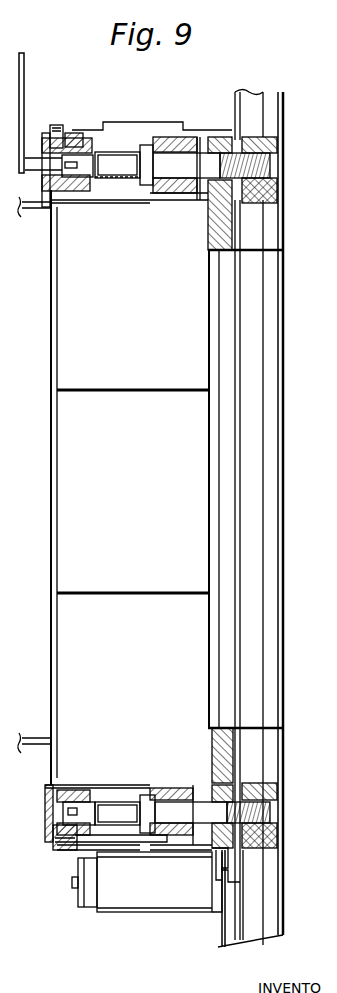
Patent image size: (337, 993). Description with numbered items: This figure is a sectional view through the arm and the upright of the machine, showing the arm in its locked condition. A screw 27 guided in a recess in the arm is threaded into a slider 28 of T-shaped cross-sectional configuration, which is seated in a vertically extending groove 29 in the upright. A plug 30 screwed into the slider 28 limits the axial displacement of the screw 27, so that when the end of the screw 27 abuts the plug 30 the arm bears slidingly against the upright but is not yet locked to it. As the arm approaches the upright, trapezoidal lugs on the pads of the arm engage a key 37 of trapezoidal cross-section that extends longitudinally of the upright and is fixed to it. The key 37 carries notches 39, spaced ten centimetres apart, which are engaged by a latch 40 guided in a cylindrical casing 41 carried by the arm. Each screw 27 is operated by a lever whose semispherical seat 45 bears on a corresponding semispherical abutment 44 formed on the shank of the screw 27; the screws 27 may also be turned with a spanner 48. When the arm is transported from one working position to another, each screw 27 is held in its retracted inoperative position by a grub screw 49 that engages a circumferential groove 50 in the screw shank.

The screw 27 is at (183, 168).
The slider 28 is at (247, 252).
The groove 29 is at (248, 112).
The plug 30 is at (262, 198).
The key 37 is at (230, 930).
The notch 39 is at (225, 852).
The latch 40 is at (215, 878).
The cylindrical casing 41 is at (140, 895).
The semispherical abutment 44 is at (133, 183).
The semispherical seat 45 is at (146, 157).
The spanner 48 is at (33, 157).
The grub screw 49 is at (66, 130).
The circumferential groove 50 is at (88, 178).